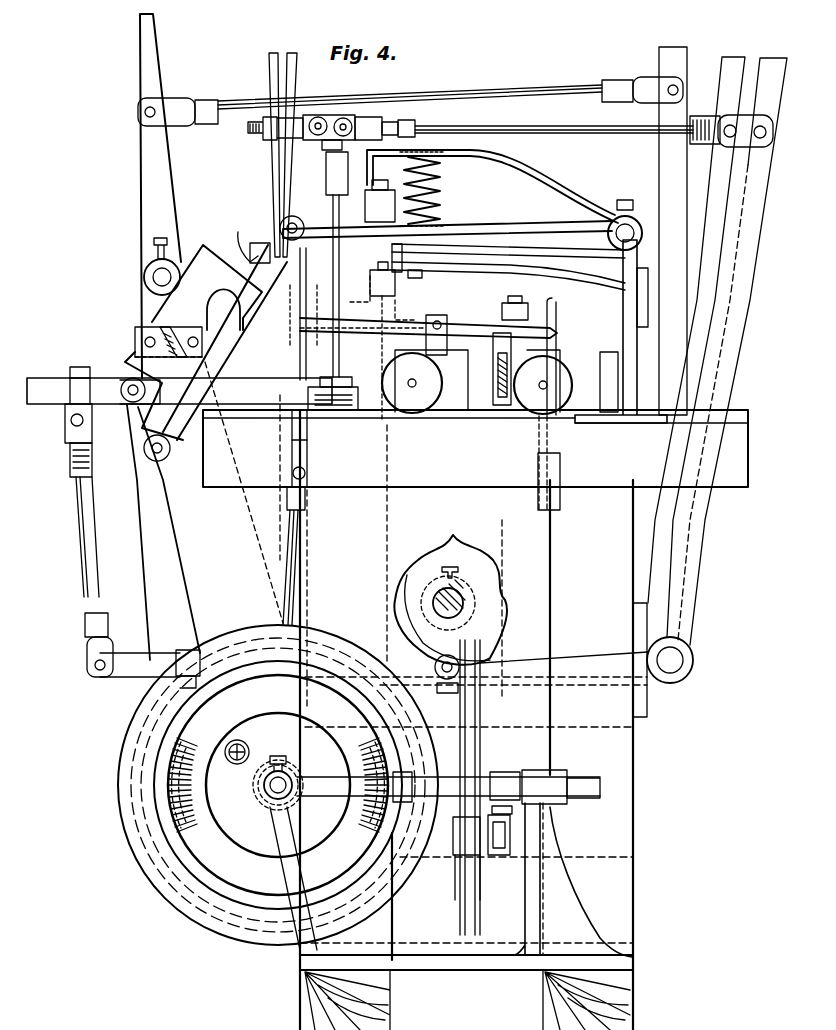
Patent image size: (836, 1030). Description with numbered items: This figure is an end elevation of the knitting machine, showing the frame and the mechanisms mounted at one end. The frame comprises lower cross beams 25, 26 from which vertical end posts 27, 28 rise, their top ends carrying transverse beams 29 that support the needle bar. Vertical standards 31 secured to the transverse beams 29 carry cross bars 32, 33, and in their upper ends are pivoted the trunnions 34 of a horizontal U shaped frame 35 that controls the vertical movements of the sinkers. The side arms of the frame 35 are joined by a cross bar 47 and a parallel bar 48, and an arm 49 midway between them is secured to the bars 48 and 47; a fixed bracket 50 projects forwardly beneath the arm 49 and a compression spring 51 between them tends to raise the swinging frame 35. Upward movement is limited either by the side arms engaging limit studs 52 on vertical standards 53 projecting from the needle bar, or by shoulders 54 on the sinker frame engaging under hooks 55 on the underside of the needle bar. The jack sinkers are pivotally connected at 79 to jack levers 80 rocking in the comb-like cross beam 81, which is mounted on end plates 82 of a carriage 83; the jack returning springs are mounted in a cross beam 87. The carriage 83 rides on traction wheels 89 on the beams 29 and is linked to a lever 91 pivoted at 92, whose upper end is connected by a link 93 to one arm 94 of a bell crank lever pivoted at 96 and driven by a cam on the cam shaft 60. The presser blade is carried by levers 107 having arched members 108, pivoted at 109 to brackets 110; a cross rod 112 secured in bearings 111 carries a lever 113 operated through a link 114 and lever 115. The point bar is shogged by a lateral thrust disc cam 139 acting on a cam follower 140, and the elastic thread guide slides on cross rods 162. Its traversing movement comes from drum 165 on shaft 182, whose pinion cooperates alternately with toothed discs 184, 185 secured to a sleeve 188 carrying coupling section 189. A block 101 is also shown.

The lower cross beam 25 is at (398, 1010).
The lower cross beam 26 is at (548, 1005).
The vertical end post 27 is at (636, 750).
The vertical end post 28 is at (300, 526).
The transverse beam 29 is at (728, 487).
The vertical standard 31 is at (298, 258).
The cross bar 32 is at (608, 363).
The cross bar 33 is at (633, 296).
The trunnion 34 is at (640, 225).
The horizontal U shaped frame 35 is at (552, 230).
The cross bar 47 is at (442, 190).
The parallel bar 48 is at (622, 258).
The arm 49 is at (528, 192).
The fixed bracket 50 is at (475, 262).
The compression spring 51 is at (405, 220).
The limit stud 52 is at (324, 148).
The vertical standard 53 is at (332, 205).
The shoulder 54 is at (308, 448).
The hook 55 is at (310, 424).
The cam shaft 60 is at (440, 604).
The pivotal connection 79 is at (310, 320).
The jack lever 80 is at (424, 268).
The cross beam 81 is at (455, 300).
The end plate 82 is at (492, 373).
The carriage 83 is at (530, 420).
The cross beam 87 is at (560, 488).
The traction wheel 89 is at (433, 414).
The lever 91 is at (278, 153).
The pivot 92 is at (284, 222).
The link 93 is at (545, 124).
The arm 94 is at (722, 176).
The pivot 96 is at (684, 660).
The block 101 is at (540, 290).
The lever 107 is at (245, 335).
The arched member 108 is at (148, 322).
The pivot 109 is at (144, 452).
The bracket 110 is at (168, 452).
The bearing 111 is at (148, 270).
The cross rod 112 is at (156, 282).
The lever 113 is at (148, 186).
The link 114 is at (240, 108).
The lever 115 is at (688, 58).
The lateral thrust disc cam 139 is at (132, 858).
The cam follower 140 is at (172, 680).
The cross rod 162 is at (128, 348).
The drum 165 is at (478, 884).
The shaft 182 is at (408, 880).
The disc 184 is at (170, 883).
The disc 185 is at (180, 905).
The sleeve 188 is at (508, 770).
The coupling section 189 is at (260, 788).